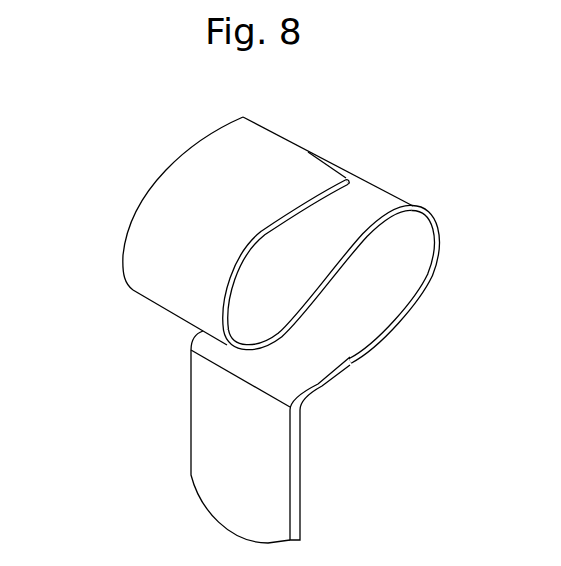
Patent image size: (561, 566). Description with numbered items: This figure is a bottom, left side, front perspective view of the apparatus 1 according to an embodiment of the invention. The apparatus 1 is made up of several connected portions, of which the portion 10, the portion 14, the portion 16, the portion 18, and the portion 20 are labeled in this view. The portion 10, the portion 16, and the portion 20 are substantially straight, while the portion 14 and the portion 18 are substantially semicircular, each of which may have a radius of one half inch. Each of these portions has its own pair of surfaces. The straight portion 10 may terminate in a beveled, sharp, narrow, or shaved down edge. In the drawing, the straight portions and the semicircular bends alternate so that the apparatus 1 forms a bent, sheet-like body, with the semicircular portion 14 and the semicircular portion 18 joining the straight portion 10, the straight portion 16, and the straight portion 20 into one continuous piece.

The apparatus 1 is at (393, 120).
The portion 10 is at (200, 453).
The portion 14 is at (430, 277).
The portion 16 is at (325, 287).
The portion 18 is at (150, 237).
The portion 20 is at (237, 170).